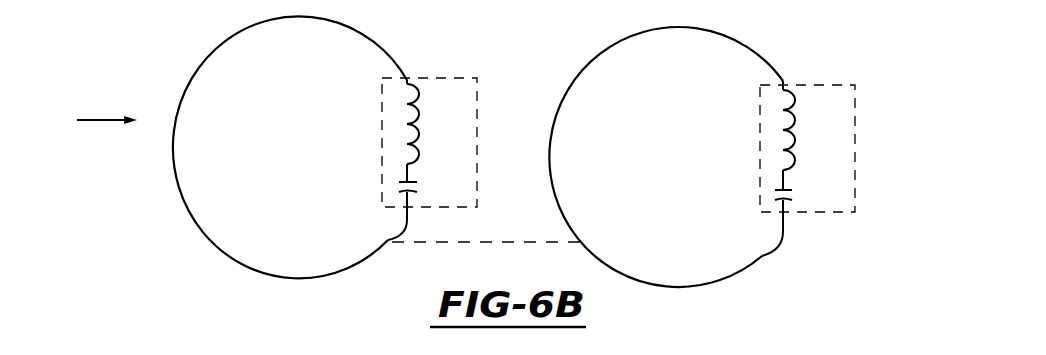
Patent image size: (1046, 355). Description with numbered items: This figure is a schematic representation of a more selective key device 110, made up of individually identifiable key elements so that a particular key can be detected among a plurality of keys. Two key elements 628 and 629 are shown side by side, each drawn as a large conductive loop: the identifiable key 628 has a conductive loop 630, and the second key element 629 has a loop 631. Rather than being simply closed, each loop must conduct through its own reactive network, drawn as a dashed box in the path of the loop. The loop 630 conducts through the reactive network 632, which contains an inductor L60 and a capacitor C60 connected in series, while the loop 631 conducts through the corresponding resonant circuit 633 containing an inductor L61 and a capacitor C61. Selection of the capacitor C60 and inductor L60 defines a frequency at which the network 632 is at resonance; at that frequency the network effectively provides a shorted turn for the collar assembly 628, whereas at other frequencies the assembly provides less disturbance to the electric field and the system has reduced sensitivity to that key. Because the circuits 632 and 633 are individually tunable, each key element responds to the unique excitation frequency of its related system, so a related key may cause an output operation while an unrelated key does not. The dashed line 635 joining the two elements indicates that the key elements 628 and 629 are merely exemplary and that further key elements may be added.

The key device 110 is at (107, 107).
The identifiable key 628 is at (340, 145).
The key element 629 is at (717, 153).
The conductive loop 630 is at (411, 42).
The loop 631 is at (787, 47).
The reactive network 632 is at (442, 136).
The resonant circuit 633 is at (822, 145).
The dashed line 635 is at (498, 242).
The inductor L60 is at (436, 124).
The capacitor C60 is at (429, 192).
The inductor L61 is at (810, 130).
The capacitor C61 is at (804, 201).